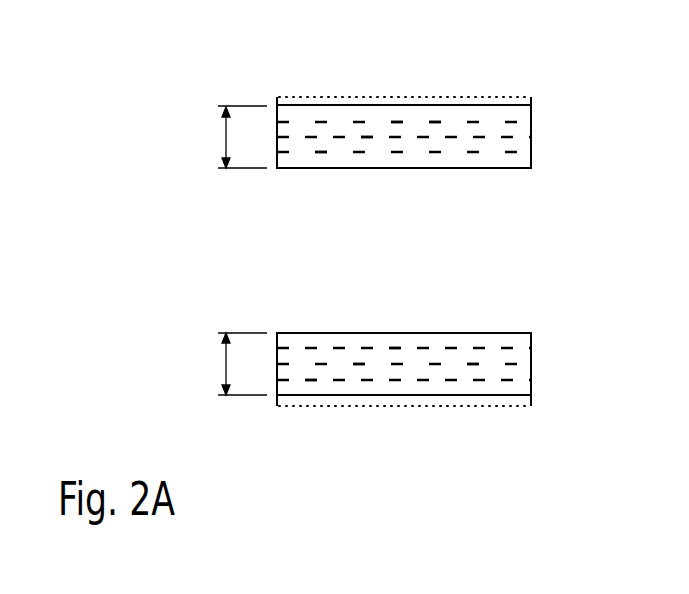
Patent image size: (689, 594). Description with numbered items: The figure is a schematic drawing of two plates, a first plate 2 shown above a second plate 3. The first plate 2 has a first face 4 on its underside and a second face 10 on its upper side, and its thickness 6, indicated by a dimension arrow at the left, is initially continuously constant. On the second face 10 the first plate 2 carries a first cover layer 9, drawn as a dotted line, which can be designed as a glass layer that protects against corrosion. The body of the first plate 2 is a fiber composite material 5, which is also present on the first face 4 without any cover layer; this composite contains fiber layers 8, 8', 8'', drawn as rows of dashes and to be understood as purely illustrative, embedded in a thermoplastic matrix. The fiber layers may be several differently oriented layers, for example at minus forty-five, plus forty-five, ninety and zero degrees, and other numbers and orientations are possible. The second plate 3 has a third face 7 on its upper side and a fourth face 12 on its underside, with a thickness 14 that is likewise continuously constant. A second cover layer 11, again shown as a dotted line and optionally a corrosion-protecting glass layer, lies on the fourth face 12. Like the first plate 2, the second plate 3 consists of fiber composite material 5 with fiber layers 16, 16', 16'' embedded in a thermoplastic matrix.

The first plate 2 is at (562, 111).
The second plate 3 is at (562, 359).
The first face 4 is at (510, 181).
The fiber composite material 5 is at (433, 130).
The thickness 6 is at (226, 138).
The third face 7 is at (509, 322).
The fiber layer 8 is at (321, 184).
The fiber layer 8' is at (368, 90).
The fiber layer 8'' is at (402, 82).
The first cover layer 9 is at (305, 98).
The second face 10 is at (510, 86).
The second cover layer 11 is at (309, 406).
The fourth face 12 is at (503, 419).
The thickness 14 is at (226, 366).
The fiber layer 16 is at (396, 309).
The fiber layer 16' is at (366, 317).
The fiber layer 16'' is at (316, 325).